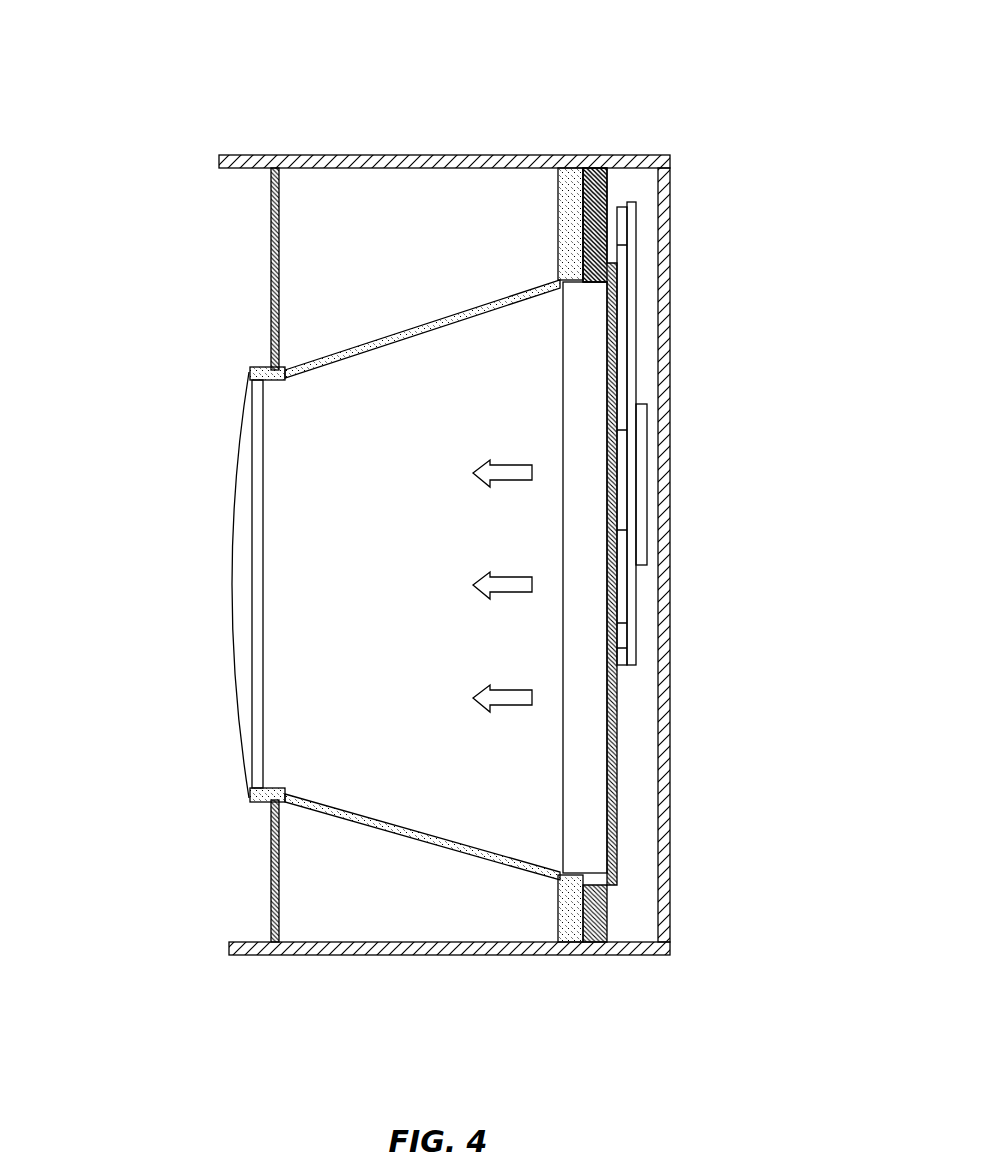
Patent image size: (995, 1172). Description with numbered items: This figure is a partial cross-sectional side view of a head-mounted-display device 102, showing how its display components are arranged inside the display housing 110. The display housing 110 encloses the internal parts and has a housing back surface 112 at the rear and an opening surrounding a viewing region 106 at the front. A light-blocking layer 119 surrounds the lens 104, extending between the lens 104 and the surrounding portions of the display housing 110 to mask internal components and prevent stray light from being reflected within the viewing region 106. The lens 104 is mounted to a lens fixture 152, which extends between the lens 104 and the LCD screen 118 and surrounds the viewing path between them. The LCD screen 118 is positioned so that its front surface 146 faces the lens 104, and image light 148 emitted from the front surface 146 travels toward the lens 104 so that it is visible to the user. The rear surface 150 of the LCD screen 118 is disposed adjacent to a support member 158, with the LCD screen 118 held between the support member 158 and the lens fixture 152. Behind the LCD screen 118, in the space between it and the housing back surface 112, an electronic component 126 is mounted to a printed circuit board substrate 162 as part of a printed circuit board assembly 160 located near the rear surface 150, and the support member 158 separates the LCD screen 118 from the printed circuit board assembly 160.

The head-mounted-display device 102 is at (88, 65).
The lens 104 is at (238, 742).
The viewing region 106 is at (225, 932).
The display housing 110 is at (415, 155).
The housing back surface 112 is at (672, 505).
The LCD screen 118 is at (565, 362).
The light-blocking layer 119 is at (271, 287).
The electronic component 126 is at (695, 408).
The front surface 146 is at (565, 830).
The image light 148 is at (513, 465).
The rear surface 150 is at (615, 772).
The lens fixture 152 is at (405, 838).
The support member 158 is at (607, 185).
The printed circuit board assembly 160 is at (637, 222).
The printed circuit board substrate 162 is at (637, 597).